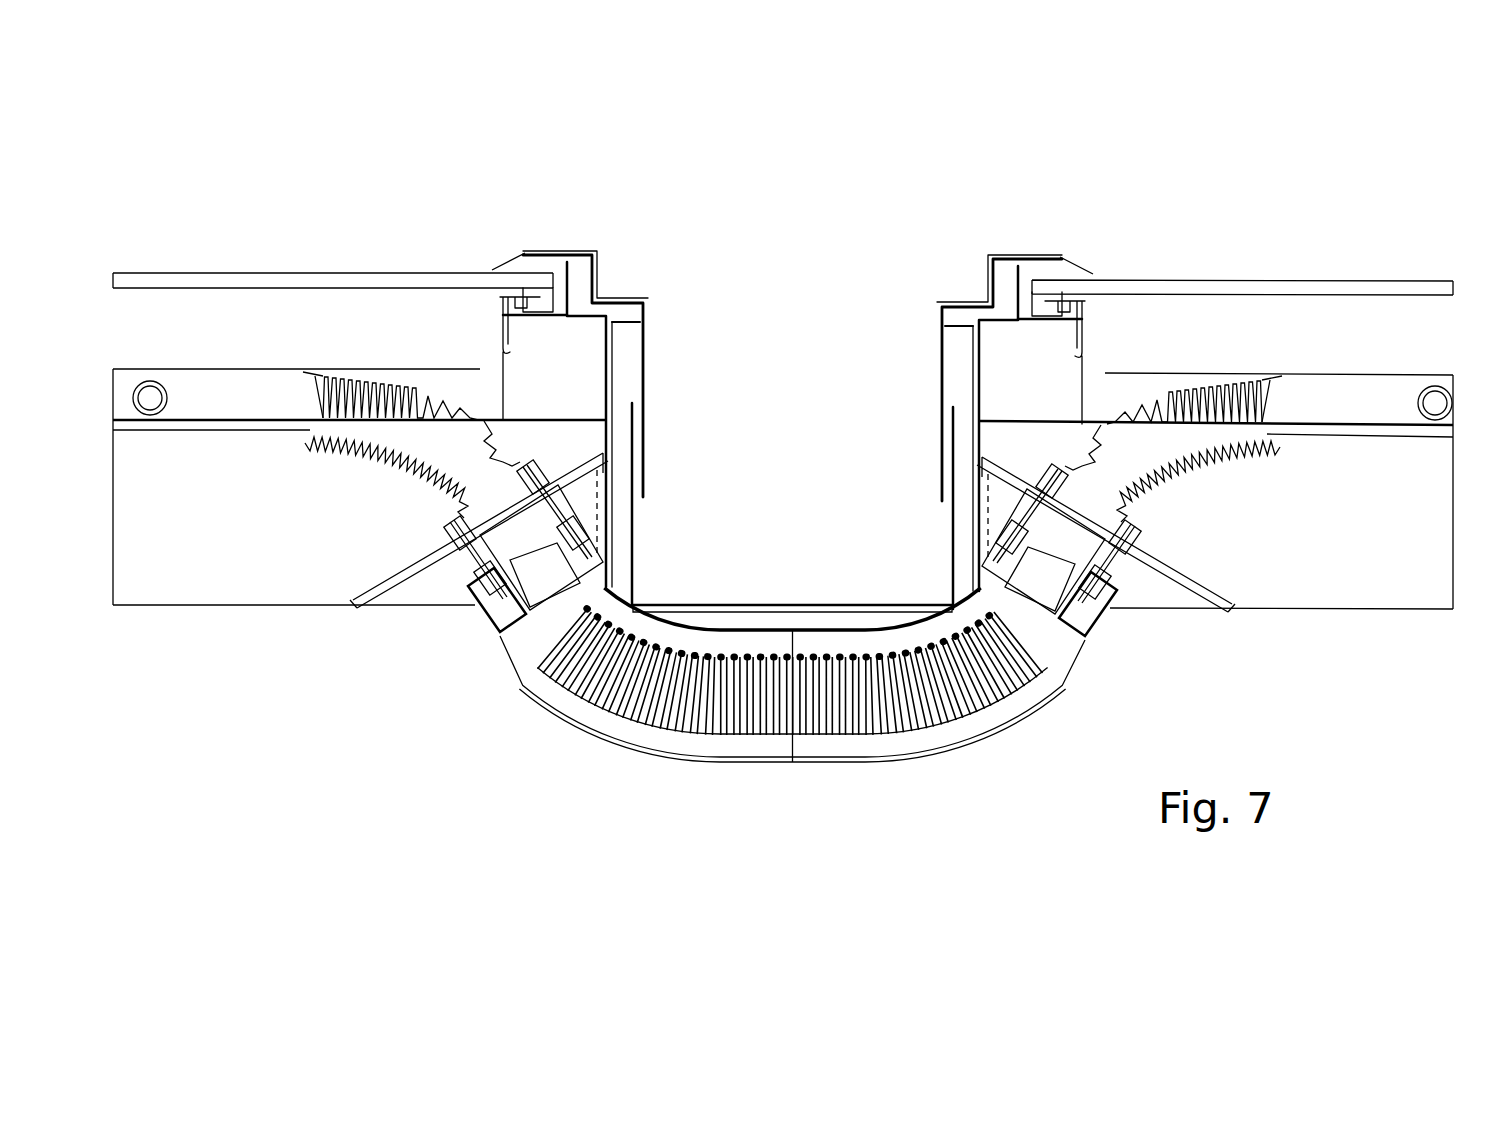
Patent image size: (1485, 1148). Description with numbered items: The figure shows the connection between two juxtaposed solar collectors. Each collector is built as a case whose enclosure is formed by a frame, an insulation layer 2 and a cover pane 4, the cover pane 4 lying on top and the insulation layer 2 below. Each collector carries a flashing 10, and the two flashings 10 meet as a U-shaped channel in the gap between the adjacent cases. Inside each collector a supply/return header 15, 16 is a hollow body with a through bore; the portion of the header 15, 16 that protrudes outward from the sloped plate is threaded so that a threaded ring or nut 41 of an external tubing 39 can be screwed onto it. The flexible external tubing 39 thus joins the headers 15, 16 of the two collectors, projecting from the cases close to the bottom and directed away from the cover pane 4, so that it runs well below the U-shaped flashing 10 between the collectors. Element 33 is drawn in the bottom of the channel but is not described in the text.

The insulation layer 2 is at (783, 489).
The cover pane 4 is at (265, 277).
The flashing 10 is at (645, 311).
The supply/return header 15 is at (505, 533).
The supply/return header 16 is at (1072, 533).
The bottom plate of channel 33 is at (855, 600).
The flexible tubing 39 is at (620, 712).
The threaded ring or nut 41 is at (497, 617).